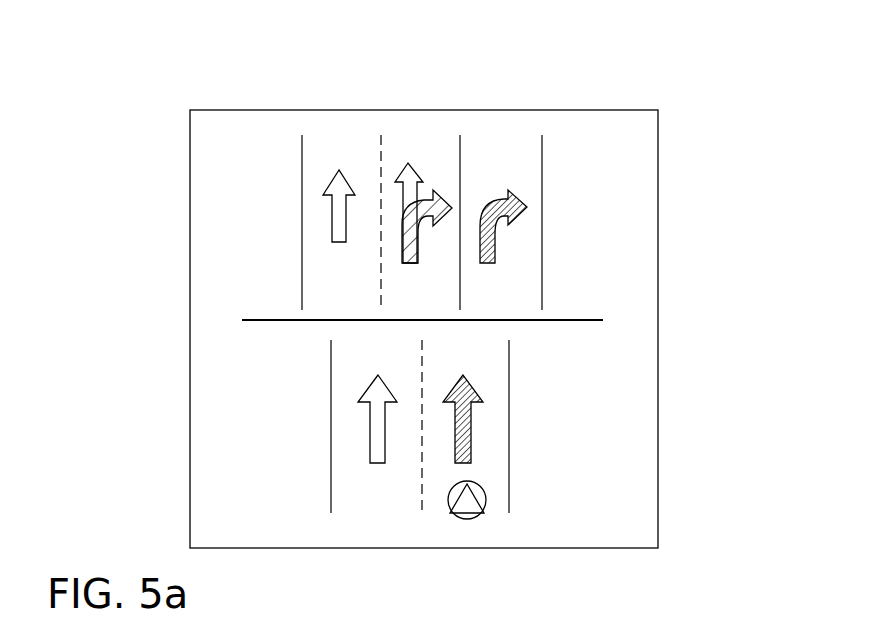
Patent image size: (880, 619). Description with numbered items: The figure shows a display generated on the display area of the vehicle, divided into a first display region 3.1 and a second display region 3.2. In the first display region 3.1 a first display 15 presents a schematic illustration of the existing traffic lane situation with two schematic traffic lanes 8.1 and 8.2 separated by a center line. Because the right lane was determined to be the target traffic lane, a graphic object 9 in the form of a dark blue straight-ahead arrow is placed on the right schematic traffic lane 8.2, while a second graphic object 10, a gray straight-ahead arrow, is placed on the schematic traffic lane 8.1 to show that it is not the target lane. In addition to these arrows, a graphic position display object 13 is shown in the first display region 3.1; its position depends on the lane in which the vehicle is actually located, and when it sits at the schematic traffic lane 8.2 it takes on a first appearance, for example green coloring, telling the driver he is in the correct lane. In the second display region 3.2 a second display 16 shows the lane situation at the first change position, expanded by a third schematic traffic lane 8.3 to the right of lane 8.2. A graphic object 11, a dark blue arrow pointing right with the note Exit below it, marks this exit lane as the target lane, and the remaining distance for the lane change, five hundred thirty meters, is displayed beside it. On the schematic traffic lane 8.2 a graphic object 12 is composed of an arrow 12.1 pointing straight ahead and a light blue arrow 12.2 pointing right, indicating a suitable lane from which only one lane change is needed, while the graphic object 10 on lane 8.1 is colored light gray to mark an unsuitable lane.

The first display region 3.1 is at (575, 445).
The second display region 3.2 is at (599, 290).
The schematic traffic lane 8.1 is at (317, 167).
The schematic traffic lane 8.2 is at (388, 153).
The third schematic traffic lane 8.3 is at (522, 167).
The graphic object 9 is at (468, 455).
The second graphic object 10 is at (336, 222).
The graphic object 11 is at (515, 208).
The graphic object 12 is at (434, 136).
The arrow pointing straight ahead 12.1 is at (408, 178).
The arrow pointing to the right 12.2 is at (438, 208).
The graphic position display object 13 is at (476, 518).
The first display 15 is at (190, 457).
The second display 16 is at (190, 257).